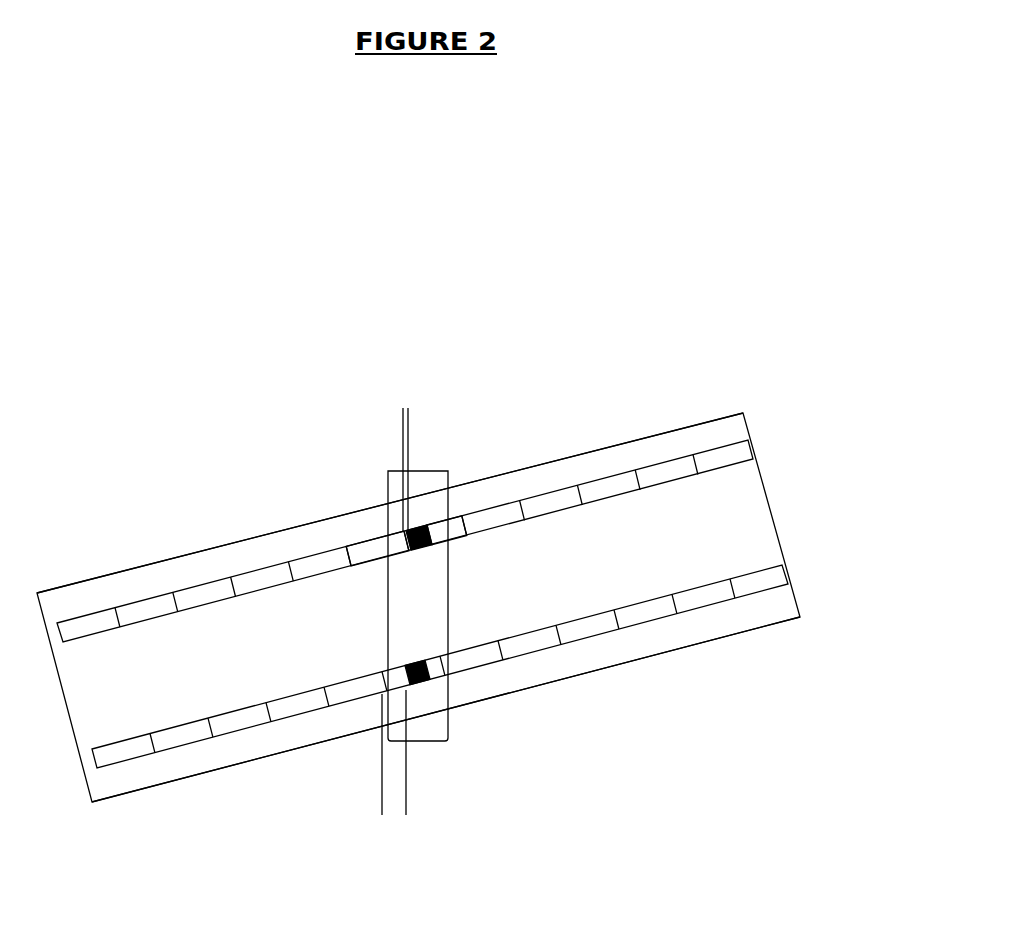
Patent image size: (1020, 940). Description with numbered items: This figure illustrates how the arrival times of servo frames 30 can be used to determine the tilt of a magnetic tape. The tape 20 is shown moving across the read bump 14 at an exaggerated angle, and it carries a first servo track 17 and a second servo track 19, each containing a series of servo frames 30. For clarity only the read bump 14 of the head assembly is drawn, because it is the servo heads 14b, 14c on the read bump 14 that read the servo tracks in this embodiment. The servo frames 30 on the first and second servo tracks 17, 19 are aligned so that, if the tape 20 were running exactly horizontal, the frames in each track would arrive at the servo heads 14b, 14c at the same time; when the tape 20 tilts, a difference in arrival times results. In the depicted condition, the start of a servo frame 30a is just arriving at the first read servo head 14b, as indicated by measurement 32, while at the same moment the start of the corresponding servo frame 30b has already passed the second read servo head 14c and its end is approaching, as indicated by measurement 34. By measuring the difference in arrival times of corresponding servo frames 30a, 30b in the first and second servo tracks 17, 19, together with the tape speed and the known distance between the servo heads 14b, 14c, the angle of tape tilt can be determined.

The read bump 14 is at (449, 471).
The first read servo head 14b is at (430, 545).
The second read servo head 14c is at (400, 658).
The first servo track 17 is at (763, 443).
The second servo track 19 is at (805, 563).
The tape 20 is at (713, 642).
The servo frames 30 is at (257, 570).
The servo frame 30a is at (370, 540).
The corresponding servo frame 30b is at (442, 680).
The measurement 32 is at (467, 425).
The measurement 34 is at (322, 782).